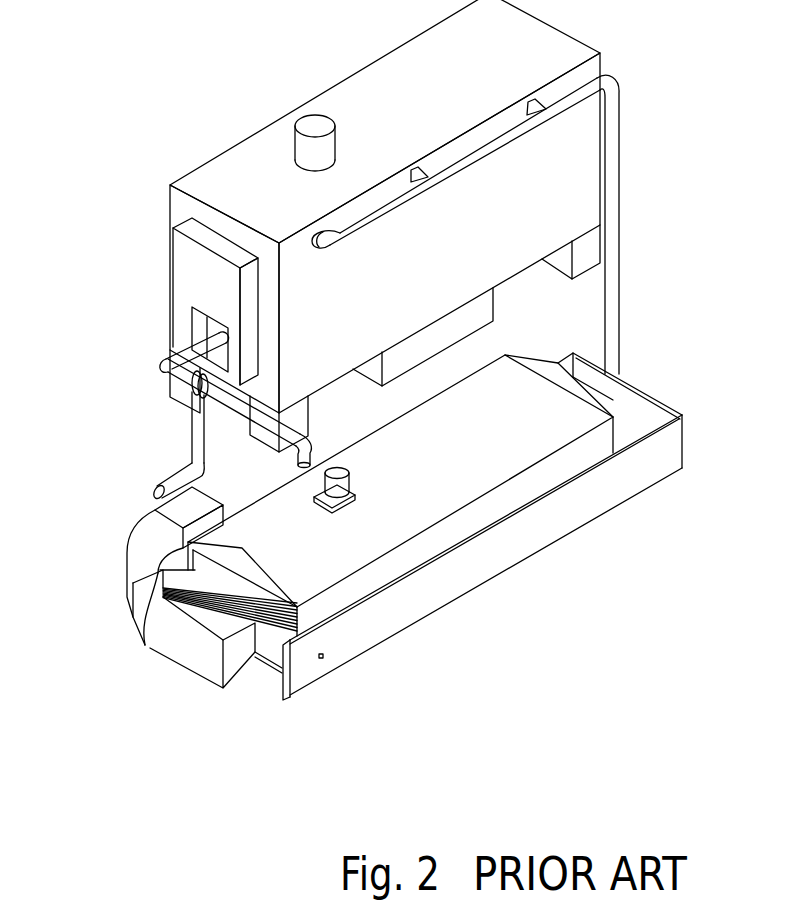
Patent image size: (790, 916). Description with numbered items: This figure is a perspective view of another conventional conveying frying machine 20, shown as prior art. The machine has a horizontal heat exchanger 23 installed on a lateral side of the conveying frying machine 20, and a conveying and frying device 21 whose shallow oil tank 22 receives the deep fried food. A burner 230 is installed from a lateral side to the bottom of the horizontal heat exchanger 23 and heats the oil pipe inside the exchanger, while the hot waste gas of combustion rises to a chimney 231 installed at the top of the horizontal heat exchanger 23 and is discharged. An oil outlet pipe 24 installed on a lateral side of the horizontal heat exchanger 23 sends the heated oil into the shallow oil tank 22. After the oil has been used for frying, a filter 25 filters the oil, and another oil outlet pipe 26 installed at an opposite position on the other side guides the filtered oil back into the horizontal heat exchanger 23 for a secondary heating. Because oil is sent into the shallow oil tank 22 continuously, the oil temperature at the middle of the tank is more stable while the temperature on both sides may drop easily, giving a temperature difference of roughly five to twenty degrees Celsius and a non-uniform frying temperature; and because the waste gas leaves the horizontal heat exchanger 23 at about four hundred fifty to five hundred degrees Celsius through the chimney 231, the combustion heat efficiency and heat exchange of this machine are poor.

The conveying frying machine 20 is at (134, 273).
The conveying and frying device 21 is at (668, 367).
The shallow oil tank 22 is at (212, 603).
The horizontal heat exchanger 23 is at (245, 156).
The oil outlet pipe 24 is at (613, 155).
The filter 25 is at (203, 505).
The oil outlet pipe 26 is at (263, 427).
The burner 230 is at (460, 330).
The chimney 231 is at (317, 123).